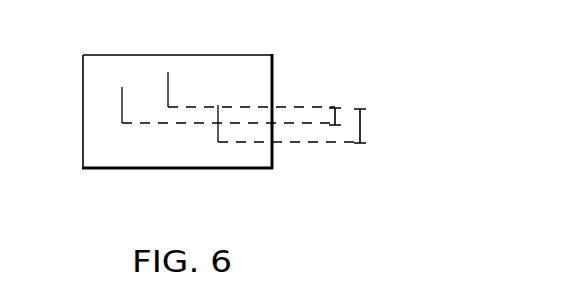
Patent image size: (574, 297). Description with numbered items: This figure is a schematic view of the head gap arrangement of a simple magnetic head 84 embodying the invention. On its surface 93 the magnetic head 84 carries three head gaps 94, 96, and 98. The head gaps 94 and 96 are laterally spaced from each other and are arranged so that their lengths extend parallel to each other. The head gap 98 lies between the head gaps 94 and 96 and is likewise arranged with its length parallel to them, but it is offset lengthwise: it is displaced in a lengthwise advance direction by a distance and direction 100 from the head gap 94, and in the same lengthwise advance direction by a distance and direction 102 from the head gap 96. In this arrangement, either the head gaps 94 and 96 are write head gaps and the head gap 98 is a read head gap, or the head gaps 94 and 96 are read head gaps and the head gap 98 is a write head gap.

The magnetic head 84 is at (217, 55).
The surface 93 is at (248, 170).
The head gap 94 is at (122, 113).
The head gap 96 is at (218, 118).
The head gap 98 is at (167, 101).
The distance and direction 100 is at (334, 108).
The distance and direction 102 is at (362, 118).